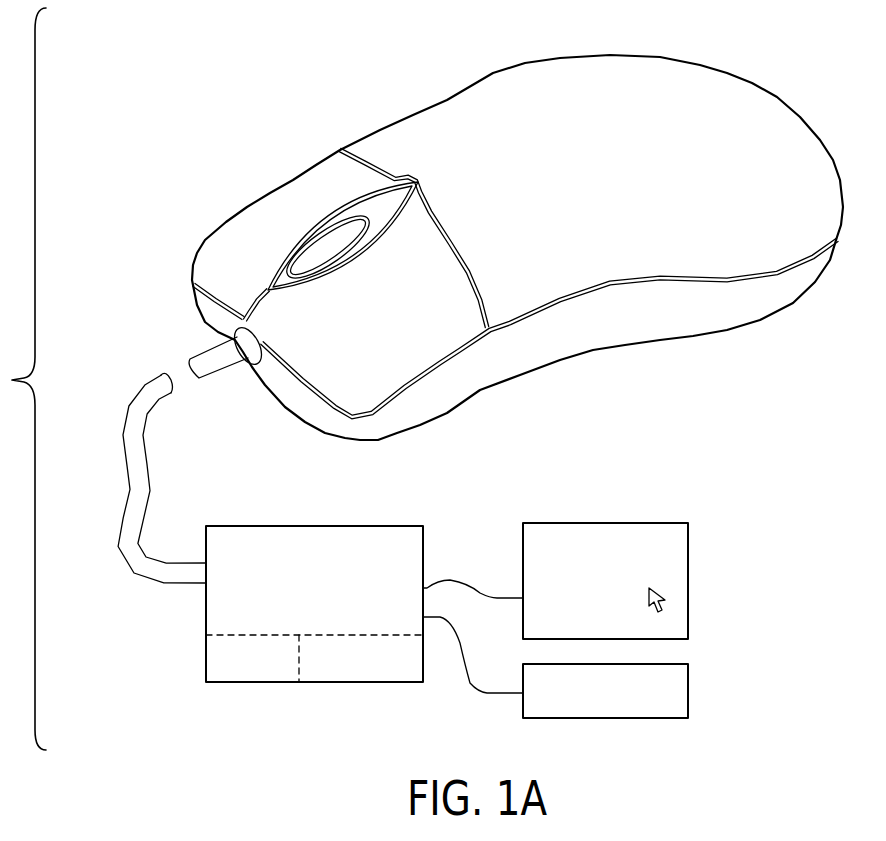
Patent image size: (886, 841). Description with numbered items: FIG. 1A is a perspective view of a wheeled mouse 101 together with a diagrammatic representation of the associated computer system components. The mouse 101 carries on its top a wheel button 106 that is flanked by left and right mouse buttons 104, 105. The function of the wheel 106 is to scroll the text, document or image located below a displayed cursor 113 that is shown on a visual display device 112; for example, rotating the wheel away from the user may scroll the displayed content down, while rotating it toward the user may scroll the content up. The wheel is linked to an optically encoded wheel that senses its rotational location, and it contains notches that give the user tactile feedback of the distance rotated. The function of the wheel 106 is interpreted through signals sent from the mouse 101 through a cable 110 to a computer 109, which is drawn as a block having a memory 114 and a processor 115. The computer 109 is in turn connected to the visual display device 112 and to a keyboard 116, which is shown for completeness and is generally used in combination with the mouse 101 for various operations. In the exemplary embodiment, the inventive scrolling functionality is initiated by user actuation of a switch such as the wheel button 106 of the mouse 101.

The mouse 101 is at (452, 76).
The left mouse button 104 is at (325, 355).
The right mouse button 105 is at (263, 217).
The wheel button 106 is at (328, 237).
The computer 109 is at (220, 607).
The cable 110 is at (130, 410).
The visual display device 112 is at (667, 538).
The displayed cursor 113 is at (663, 607).
The memory 114 is at (205, 680).
The processor 115 is at (375, 680).
The keyboard 116 is at (673, 683).